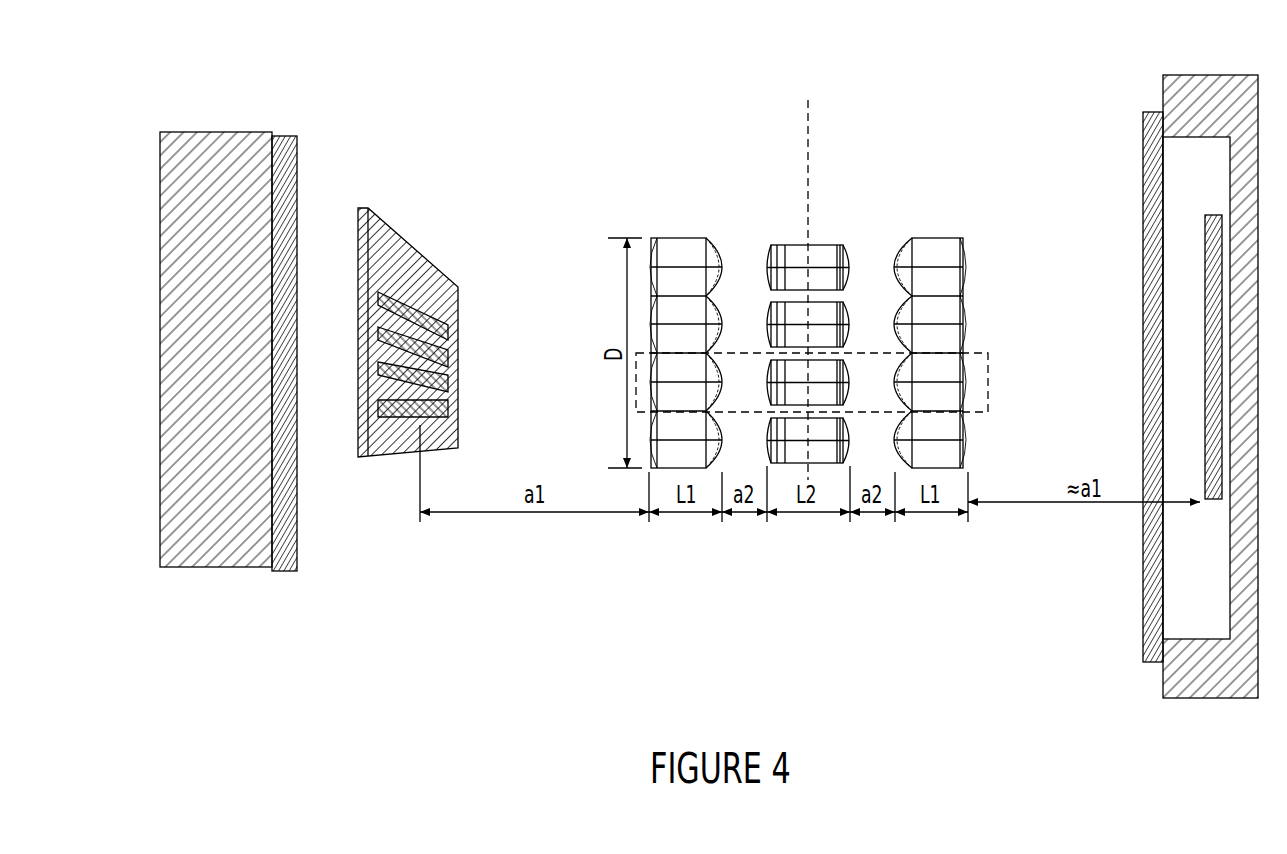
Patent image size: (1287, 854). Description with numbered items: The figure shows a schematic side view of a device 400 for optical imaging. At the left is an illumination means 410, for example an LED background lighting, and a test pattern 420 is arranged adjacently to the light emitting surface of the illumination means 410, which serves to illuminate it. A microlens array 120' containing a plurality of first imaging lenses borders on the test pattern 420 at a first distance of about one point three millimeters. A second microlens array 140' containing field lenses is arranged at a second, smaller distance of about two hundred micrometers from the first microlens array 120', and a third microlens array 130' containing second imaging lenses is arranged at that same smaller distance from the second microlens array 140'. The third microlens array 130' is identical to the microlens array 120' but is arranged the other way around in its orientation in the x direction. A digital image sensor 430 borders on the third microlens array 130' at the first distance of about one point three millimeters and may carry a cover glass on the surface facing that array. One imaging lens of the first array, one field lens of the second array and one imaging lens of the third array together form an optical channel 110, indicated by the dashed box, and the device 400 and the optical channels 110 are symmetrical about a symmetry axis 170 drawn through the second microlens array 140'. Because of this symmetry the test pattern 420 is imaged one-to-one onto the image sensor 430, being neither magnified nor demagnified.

The device 400 is at (1070, 76).
The illumination means 410 is at (220, 568).
The test pattern 420 is at (366, 458).
The microlens array 120' is at (688, 314).
The second microlens array 140' is at (820, 313).
The third microlens array 130' is at (937, 314).
The symmetry axis 170 is at (808, 128).
The optical channel 110 is at (988, 357).
The digital image sensor 430 is at (1203, 699).